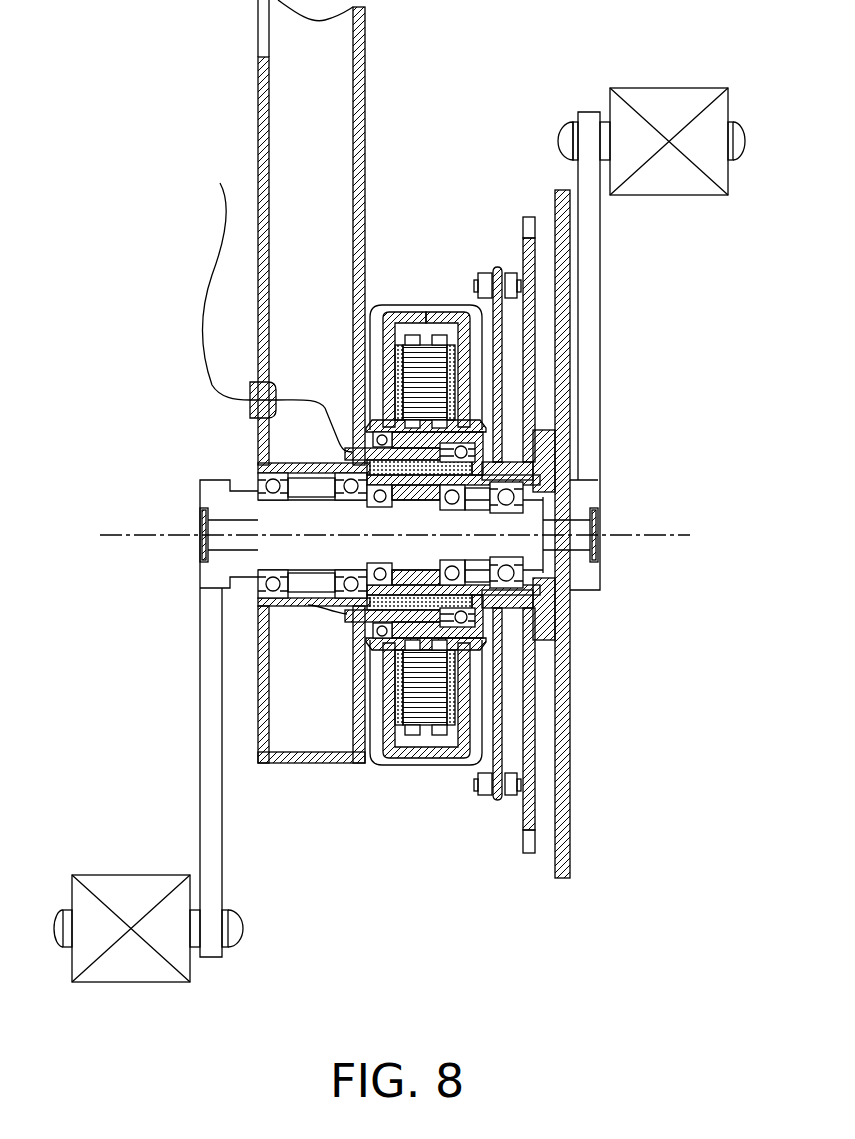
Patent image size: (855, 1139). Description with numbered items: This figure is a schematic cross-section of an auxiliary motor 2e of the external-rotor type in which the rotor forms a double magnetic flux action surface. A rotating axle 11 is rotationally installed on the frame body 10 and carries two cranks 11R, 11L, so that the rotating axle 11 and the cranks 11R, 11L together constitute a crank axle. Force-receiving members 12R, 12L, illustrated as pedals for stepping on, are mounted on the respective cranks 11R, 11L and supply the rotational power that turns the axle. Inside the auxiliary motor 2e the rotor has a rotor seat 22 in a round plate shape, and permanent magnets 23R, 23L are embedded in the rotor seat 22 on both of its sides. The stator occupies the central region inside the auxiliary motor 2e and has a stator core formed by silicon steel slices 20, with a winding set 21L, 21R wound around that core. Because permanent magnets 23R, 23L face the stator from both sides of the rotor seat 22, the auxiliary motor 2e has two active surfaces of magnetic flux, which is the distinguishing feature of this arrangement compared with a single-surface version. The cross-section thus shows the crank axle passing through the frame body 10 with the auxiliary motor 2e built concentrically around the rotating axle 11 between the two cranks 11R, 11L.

The frame body 10 is at (278, 58).
The rotating axle 11 is at (525, 548).
The crank 11L is at (210, 772).
The crank 11R is at (588, 308).
The force-receiving member 12L is at (130, 885).
The force-receiving member 12R is at (675, 185).
The auxiliary motor 2e is at (440, 327).
The silicon steel slices 20 is at (443, 348).
The winding set 21L is at (412, 735).
The winding set 21R is at (440, 735).
The rotor seat 22 is at (418, 731).
The permanent magnet 23L is at (403, 315).
The permanent magnet 23R is at (452, 330).